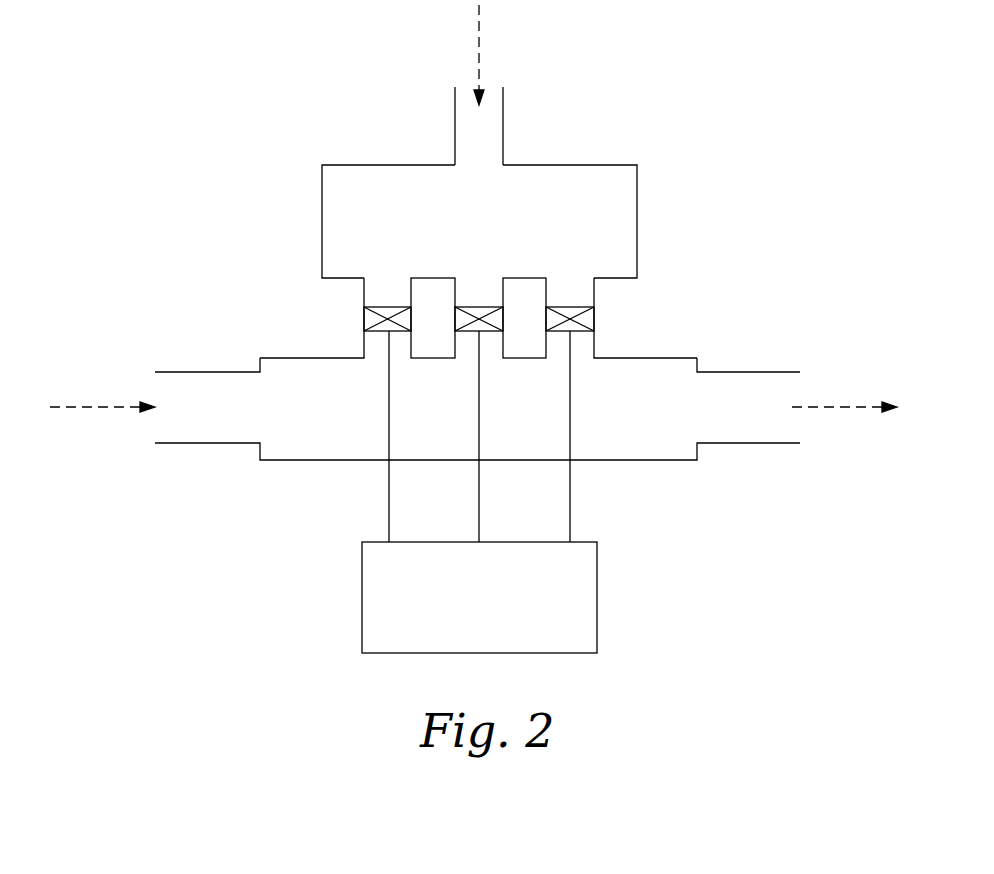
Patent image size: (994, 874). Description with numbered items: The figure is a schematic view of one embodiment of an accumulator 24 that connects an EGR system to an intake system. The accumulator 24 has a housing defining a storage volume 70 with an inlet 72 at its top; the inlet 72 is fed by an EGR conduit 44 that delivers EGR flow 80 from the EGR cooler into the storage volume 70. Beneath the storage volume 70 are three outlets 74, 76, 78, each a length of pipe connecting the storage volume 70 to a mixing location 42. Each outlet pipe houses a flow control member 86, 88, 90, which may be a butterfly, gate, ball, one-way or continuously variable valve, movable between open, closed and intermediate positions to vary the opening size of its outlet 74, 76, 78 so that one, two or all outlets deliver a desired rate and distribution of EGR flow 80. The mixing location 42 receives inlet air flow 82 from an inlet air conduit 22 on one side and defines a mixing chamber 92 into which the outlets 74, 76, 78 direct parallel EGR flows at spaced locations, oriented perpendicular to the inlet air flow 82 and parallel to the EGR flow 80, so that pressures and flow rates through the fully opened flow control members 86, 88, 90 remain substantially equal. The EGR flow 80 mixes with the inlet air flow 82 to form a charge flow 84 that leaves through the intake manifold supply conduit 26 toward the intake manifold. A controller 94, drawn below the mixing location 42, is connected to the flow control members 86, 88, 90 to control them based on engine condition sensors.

The inlet air conduit 22 is at (207, 370).
The accumulator 24 is at (339, 158).
The intake manifold supply conduit 26 is at (728, 370).
The mixing location 42 is at (318, 462).
The EGR conduit 44 is at (455, 128).
The storage volume 70 is at (615, 222).
The inlet 72 is at (503, 165).
The outlet 74 is at (362, 290).
The outlet 76 is at (505, 298).
The outlet 78 is at (596, 342).
The EGR flow 80 is at (480, 57).
The inlet air flow 82 is at (73, 410).
The charge flow 84 is at (845, 410).
The flow control member 86 is at (388, 305).
The flow control member 88 is at (485, 305).
The flow control member 90 is at (580, 305).
The mixing chamber 92 is at (600, 430).
The controller 94 is at (598, 588).